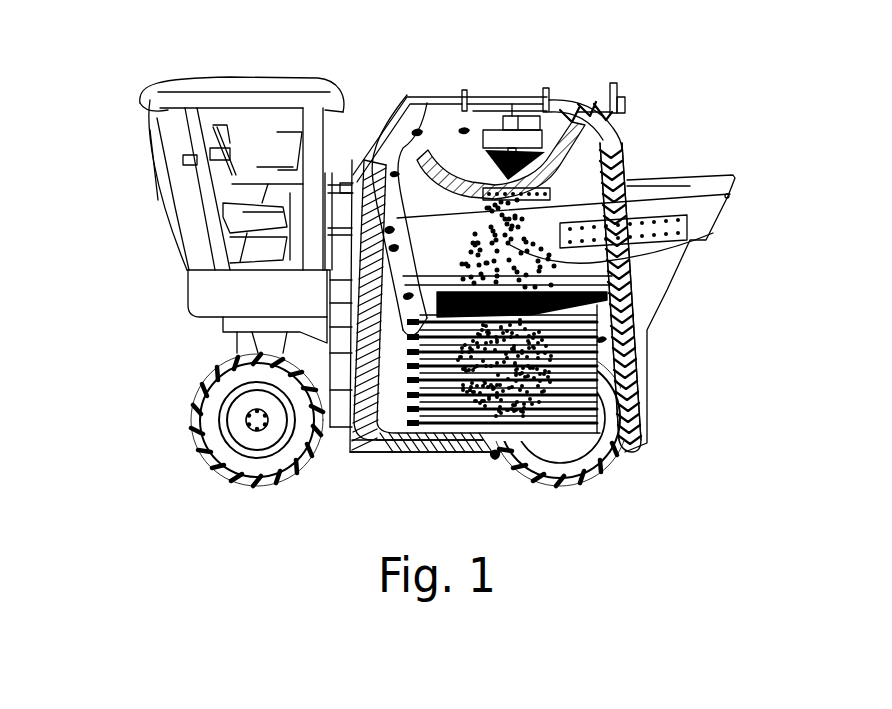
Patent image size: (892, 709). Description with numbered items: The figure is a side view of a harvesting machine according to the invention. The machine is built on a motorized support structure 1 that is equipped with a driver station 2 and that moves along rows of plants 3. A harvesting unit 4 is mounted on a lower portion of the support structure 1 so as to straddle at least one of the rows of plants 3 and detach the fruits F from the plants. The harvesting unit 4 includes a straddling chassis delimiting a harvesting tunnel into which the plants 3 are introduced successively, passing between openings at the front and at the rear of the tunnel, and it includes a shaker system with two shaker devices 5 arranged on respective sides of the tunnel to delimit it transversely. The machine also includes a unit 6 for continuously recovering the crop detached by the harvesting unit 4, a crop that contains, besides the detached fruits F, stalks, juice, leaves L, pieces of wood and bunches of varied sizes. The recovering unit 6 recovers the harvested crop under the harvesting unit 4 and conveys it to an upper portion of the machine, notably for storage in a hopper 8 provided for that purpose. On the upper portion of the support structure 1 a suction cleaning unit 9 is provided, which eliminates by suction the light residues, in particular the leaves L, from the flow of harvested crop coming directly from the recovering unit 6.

The motorized support structure 1 is at (233, 302).
The driver station 2 is at (183, 159).
The rows of plants 3 is at (627, 443).
The harvesting unit 4 is at (643, 380).
The shaker devices 5 is at (620, 291).
The recovering unit 6 is at (413, 453).
The hopper 8 is at (667, 290).
The suction cleaning unit 9 is at (513, 118).
The leaves L is at (409, 125).
The fruits F is at (697, 247).